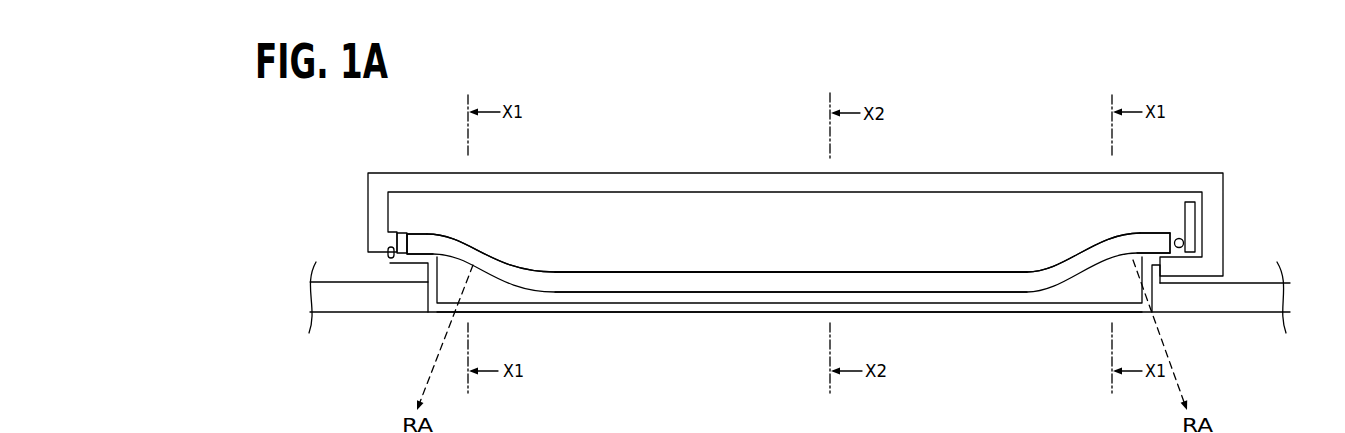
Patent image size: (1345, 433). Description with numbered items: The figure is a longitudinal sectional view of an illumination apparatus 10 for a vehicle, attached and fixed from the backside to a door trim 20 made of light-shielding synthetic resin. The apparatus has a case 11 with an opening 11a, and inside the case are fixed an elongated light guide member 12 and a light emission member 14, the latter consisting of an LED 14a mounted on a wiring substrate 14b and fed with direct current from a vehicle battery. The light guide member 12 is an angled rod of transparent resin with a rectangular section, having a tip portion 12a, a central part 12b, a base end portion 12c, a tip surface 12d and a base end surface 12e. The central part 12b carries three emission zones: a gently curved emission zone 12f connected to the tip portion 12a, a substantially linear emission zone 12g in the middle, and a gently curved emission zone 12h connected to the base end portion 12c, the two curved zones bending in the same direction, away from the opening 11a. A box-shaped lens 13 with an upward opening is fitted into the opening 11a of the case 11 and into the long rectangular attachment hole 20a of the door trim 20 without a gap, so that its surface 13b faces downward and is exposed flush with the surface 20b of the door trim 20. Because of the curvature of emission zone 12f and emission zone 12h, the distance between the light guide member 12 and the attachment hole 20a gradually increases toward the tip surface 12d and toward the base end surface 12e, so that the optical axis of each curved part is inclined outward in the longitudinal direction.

The illumination apparatus 10 is at (1295, 110).
The case 11 is at (380, 173).
The opening 11a is at (390, 250).
The light guide member 12 is at (990, 293).
The tip portion 12a is at (425, 233).
The central part 12b is at (1068, 232).
The base end portion 12c is at (1153, 233).
The tip surface 12d is at (418, 219).
The base end surface 12e is at (1176, 232).
The emission zone 12f is at (492, 246).
The emission zone 12g is at (740, 271).
The emission zone 12h is at (1097, 247).
The lens 13 is at (594, 313).
The surface 13b is at (712, 316).
The light emission member 14 is at (1278, 192).
The LED 14a is at (1184, 243).
The wiring substrate 14b is at (1196, 211).
The door trim 20 is at (362, 313).
The attachment hole 20a is at (436, 313).
The surface 20b is at (1238, 317).